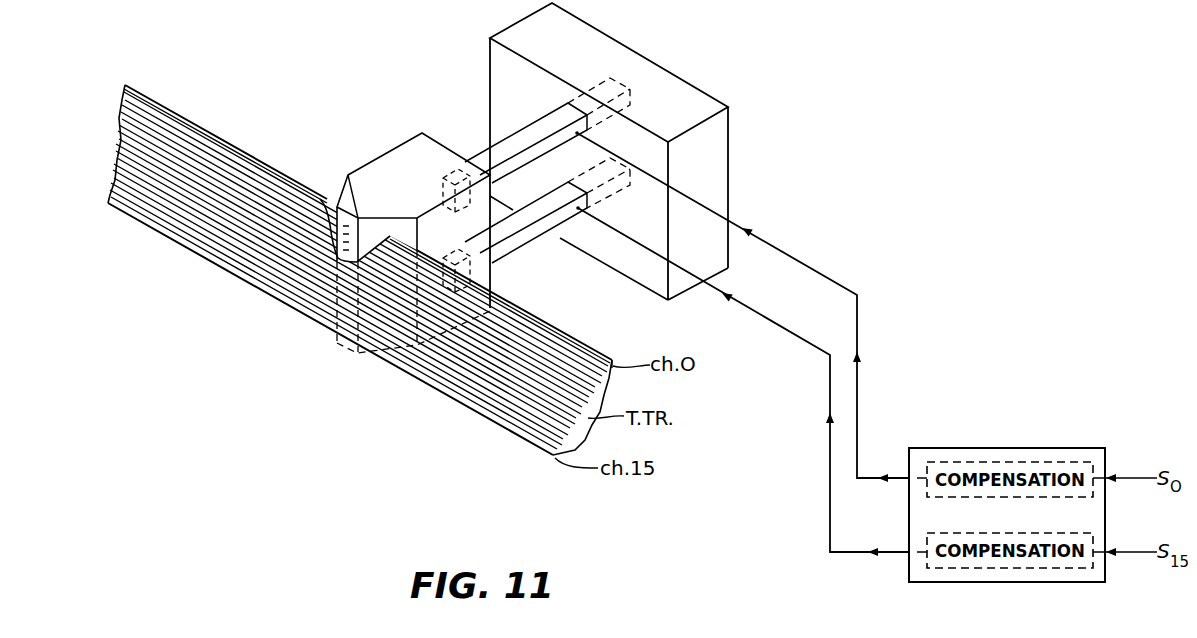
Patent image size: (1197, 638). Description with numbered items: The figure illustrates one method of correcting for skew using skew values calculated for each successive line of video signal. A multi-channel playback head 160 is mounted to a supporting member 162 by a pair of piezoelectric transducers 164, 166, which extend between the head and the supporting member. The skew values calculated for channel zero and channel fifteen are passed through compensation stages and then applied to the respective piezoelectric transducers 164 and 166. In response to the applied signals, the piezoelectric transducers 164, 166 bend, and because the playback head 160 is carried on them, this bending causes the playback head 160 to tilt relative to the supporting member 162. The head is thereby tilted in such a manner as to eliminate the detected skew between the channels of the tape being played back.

The multi-channel playback head 160 is at (397, 152).
The supporting member 162 is at (683, 80).
The piezoelectric transducer 164 is at (560, 117).
The piezoelectric transducer 166 is at (562, 197).